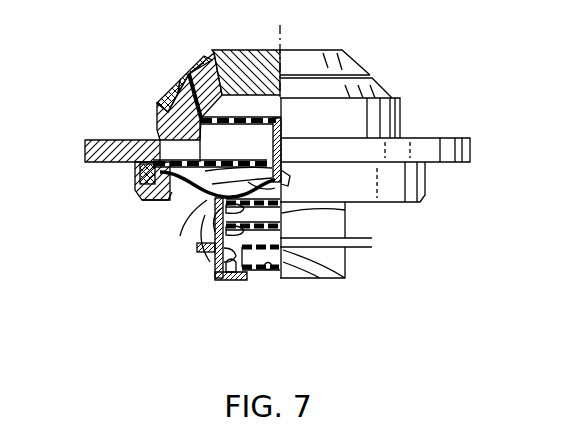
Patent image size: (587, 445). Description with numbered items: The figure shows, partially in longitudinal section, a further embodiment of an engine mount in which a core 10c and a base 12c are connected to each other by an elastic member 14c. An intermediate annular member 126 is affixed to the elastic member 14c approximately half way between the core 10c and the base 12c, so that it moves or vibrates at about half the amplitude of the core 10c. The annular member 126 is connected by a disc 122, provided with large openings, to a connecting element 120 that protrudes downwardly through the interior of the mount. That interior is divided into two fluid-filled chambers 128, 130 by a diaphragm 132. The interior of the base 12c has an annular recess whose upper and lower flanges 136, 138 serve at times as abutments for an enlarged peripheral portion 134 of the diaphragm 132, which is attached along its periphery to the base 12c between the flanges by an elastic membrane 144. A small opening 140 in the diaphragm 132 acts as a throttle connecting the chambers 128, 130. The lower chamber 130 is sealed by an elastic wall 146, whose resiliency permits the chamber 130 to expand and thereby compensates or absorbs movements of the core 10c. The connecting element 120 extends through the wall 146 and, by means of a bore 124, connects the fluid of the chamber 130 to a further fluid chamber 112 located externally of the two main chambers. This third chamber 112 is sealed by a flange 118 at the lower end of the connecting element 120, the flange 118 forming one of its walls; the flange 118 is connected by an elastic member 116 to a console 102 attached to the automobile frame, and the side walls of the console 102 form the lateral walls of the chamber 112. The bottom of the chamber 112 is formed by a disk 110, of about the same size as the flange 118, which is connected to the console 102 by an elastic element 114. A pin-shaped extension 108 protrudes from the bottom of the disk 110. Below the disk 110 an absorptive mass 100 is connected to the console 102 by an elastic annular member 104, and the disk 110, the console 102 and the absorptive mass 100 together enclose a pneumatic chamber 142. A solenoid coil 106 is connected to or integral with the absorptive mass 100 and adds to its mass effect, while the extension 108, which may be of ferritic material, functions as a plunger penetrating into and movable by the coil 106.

The core 10c is at (246, 72).
The base 12c is at (98, 140).
The elastic member 14c is at (203, 60).
The absorptive mass 100 is at (268, 283).
The console 102 is at (222, 284).
The elastic annular member 104 is at (233, 284).
The solenoid coil 106 is at (283, 273).
The pin-shaped extension 108 is at (287, 264).
The disk 110 is at (300, 196).
The fluid chamber 112 is at (283, 213).
The elastic element 114 is at (211, 262).
The elastic member 116 is at (212, 225).
The flange 118 is at (346, 210).
The connecting element 120 is at (298, 140).
The disc 122 is at (283, 118).
The bore 124 is at (325, 161).
The intermediate annular member 126 is at (189, 72).
The chamber 128 is at (182, 97).
The chamber 130 is at (283, 186).
The diaphragm 132 is at (222, 160).
The enlarged peripheral portion 134 is at (143, 200).
The upper flange 136 is at (162, 136).
The lower flange 138 is at (160, 192).
The small opening 140 is at (284, 166).
The pneumatic chamber 142 is at (347, 262).
The elastic membrane 144 is at (127, 175).
The elastic wall 146 is at (200, 197).